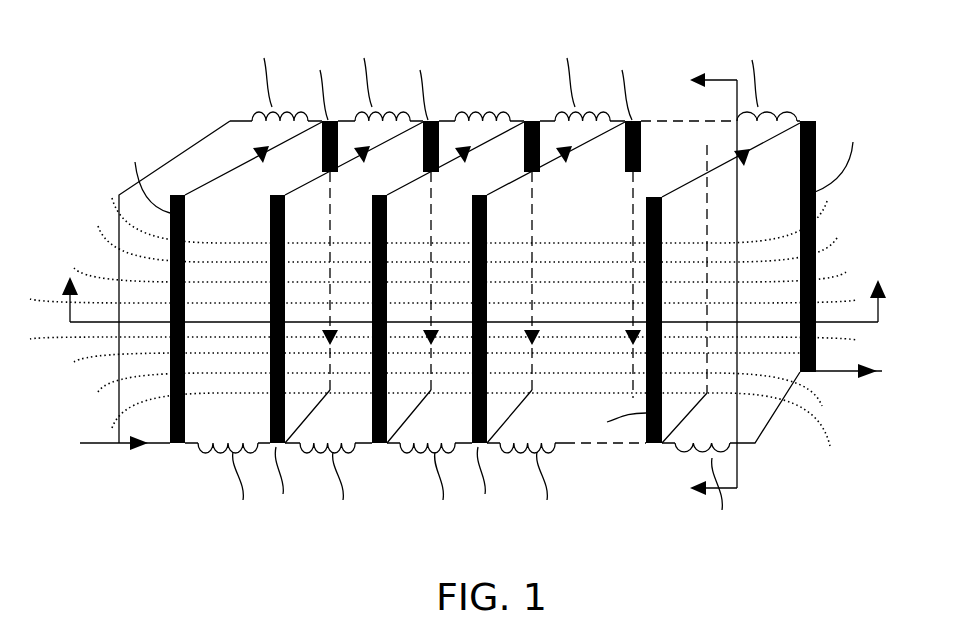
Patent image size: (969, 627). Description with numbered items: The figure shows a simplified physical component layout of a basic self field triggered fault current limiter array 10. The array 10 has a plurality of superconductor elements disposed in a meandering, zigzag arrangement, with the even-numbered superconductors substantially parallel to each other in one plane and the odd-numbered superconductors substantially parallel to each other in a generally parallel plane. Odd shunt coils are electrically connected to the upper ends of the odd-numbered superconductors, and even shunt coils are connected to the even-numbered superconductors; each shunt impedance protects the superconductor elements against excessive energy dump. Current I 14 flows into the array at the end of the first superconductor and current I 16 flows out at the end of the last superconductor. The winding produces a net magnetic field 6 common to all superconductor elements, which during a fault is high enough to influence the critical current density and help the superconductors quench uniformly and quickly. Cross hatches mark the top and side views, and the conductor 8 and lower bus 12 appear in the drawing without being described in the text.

The net magnetic field 6 is at (443, 300).
The bypass current conductor 8 is at (686, 123).
The fault current limiter array 10 is at (822, 35).
The lower bus conductor 12 is at (604, 447).
The current I (input) 14 is at (100, 446).
The current I (output) 16 is at (882, 371).